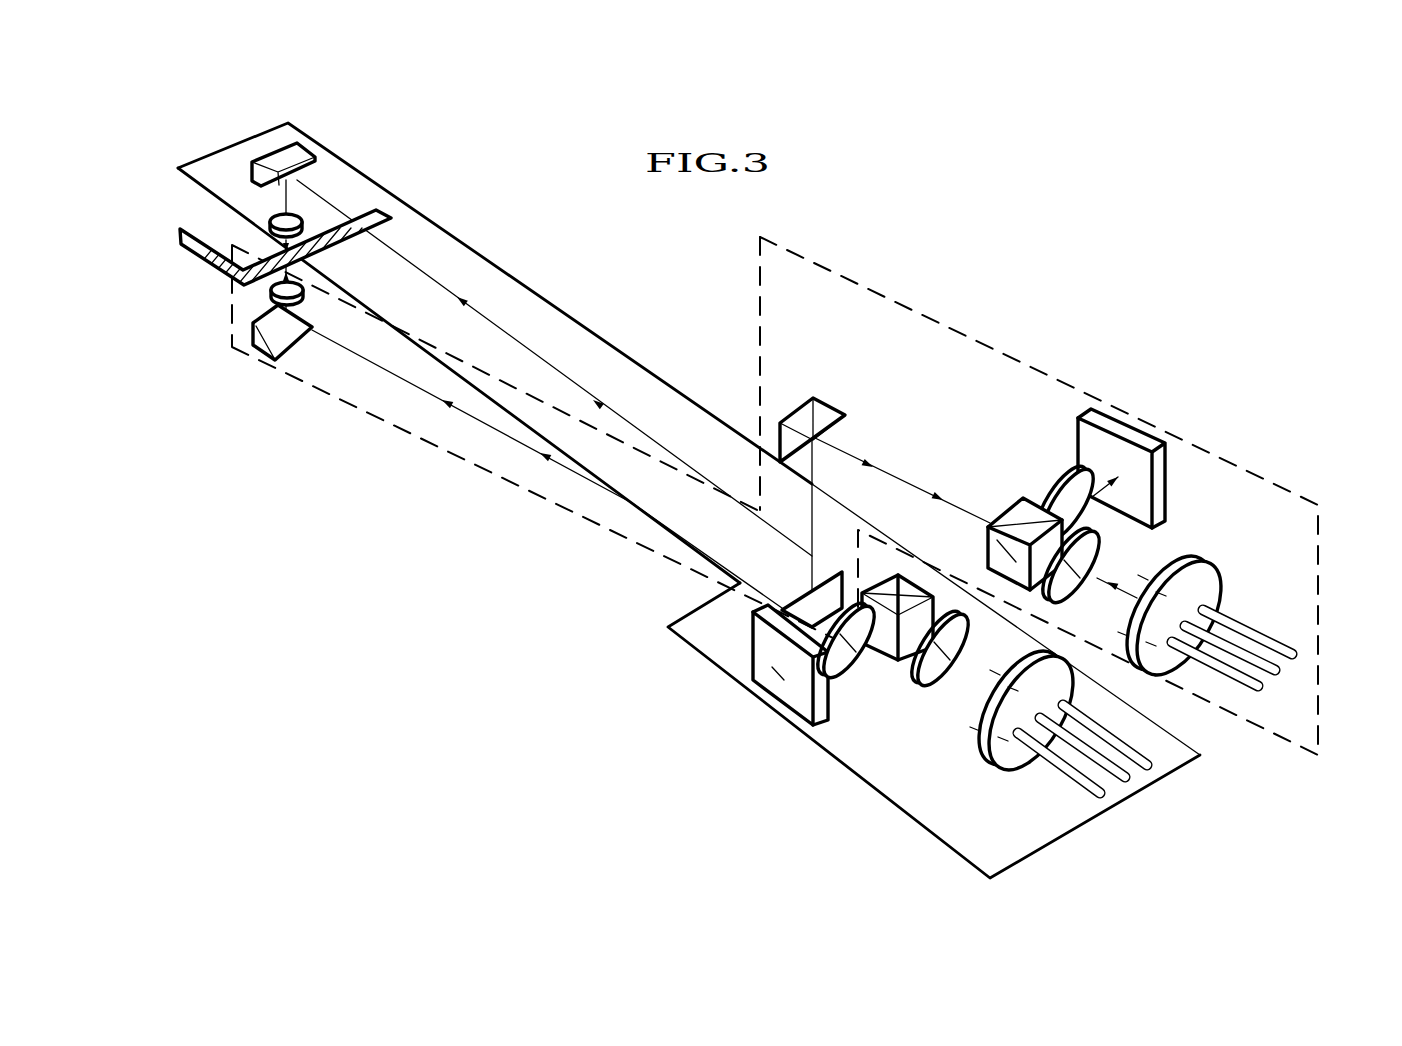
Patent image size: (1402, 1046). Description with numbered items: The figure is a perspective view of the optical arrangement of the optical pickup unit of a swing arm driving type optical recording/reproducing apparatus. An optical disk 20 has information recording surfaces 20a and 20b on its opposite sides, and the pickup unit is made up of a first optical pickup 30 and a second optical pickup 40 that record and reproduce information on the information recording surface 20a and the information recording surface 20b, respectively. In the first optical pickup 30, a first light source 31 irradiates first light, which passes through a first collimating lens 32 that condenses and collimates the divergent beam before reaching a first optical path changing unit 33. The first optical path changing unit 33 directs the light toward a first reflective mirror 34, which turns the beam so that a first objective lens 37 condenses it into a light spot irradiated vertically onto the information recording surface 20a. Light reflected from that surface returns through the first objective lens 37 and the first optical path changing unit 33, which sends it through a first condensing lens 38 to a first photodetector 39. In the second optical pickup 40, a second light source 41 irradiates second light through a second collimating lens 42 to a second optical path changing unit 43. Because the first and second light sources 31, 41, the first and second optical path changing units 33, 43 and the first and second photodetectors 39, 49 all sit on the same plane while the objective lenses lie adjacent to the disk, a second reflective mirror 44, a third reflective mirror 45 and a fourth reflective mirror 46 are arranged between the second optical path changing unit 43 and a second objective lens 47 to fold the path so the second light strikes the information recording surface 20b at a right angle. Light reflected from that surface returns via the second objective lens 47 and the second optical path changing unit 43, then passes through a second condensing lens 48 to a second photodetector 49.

The optical disk 20 is at (198, 254).
The information recording surface 20a is at (313, 228).
The information recording surface 20b is at (238, 268).
The first optical pickup 30 is at (858, 777).
The first light source 31 is at (987, 753).
The first collimating lens 32 is at (933, 677).
The first optical path changing unit 33 is at (887, 663).
The first reflective mirror 34 is at (297, 152).
The first objective lens 37 is at (292, 214).
The first condensing lens 38 is at (853, 677).
The first photodetector 39 is at (780, 680).
The second optical pickup 40 is at (1245, 470).
The second light source 41 is at (1197, 570).
The second collimating lens 42 is at (1098, 553).
The second optical path changing unit 43 is at (1007, 505).
The second reflective mirror 44 is at (815, 397).
The third reflective mirror 45 is at (807, 578).
The fourth reflective mirror 46 is at (262, 352).
The second objective lens 47 is at (307, 282).
The second condensing lens 48 is at (1063, 483).
The second photodetector 49 is at (1113, 432).